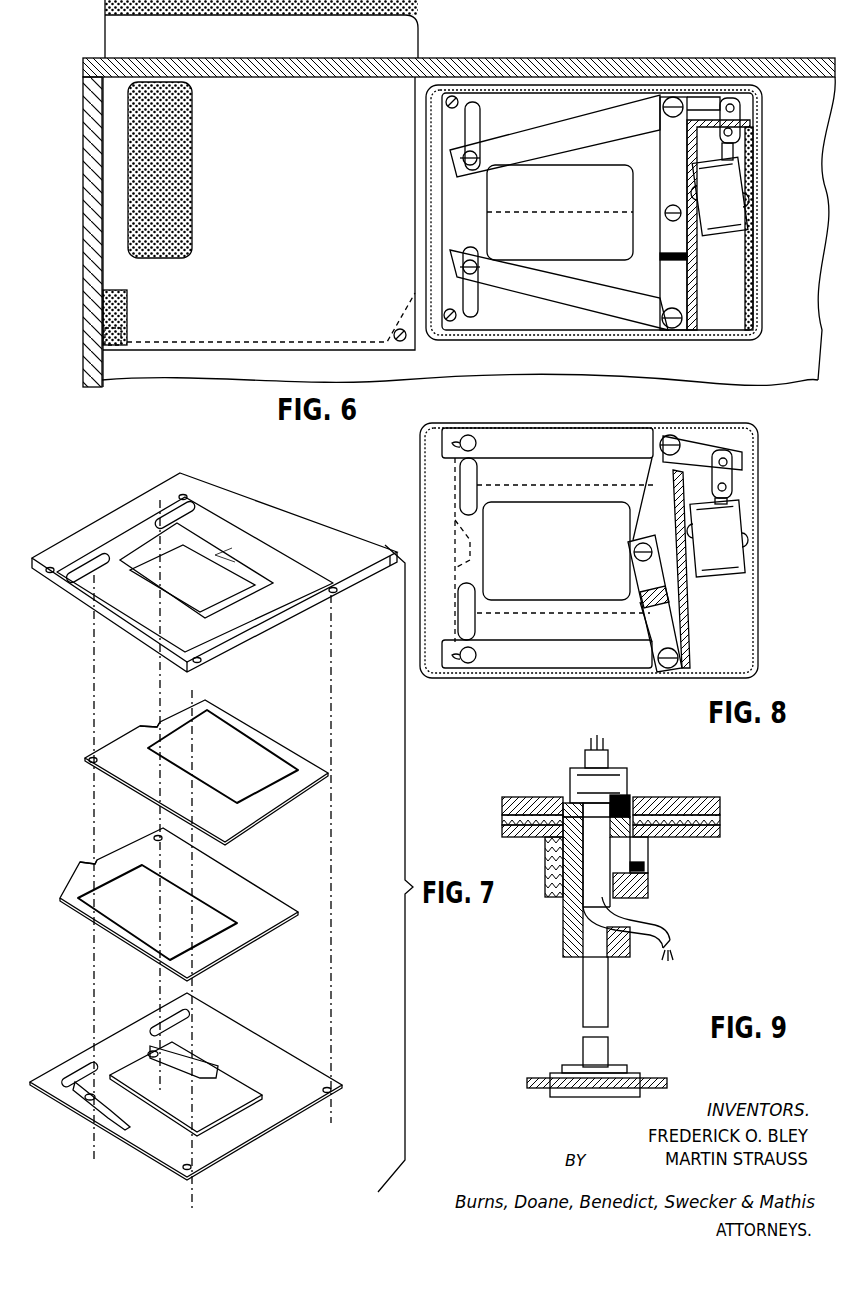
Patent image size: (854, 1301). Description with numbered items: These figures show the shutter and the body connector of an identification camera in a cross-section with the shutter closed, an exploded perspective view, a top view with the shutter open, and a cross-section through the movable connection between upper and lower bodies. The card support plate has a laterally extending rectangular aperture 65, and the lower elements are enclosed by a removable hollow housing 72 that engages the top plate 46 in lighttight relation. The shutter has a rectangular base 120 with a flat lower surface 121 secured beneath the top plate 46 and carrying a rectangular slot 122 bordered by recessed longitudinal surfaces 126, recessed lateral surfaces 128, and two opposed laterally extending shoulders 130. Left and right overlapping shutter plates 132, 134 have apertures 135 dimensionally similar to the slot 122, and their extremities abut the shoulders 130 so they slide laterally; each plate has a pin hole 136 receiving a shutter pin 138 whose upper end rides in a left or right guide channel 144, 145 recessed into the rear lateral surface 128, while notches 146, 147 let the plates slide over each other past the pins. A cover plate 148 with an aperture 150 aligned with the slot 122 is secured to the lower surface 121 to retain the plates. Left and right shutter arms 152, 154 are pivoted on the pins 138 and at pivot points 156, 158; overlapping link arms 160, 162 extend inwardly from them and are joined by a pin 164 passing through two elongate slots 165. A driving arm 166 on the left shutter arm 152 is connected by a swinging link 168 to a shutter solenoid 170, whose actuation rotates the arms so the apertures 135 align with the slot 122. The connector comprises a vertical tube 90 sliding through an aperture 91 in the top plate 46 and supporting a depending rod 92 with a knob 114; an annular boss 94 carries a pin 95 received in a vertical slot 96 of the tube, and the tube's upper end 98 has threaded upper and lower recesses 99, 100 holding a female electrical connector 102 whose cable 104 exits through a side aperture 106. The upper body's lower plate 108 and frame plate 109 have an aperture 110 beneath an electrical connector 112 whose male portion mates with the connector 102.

In FIG. 9, the top plate 46 is at (505, 828).
In FIG. 6, the aperture 65 is at (177, 133).
In FIG. 9, the housing 72 is at (653, 1080).
In FIG. 9, the tube 90 is at (563, 940).
In FIG. 9, the aperture 91 is at (630, 797).
In FIG. 9, the rod 92 is at (603, 993).
In FIG. 9, the annular boss 94 is at (648, 845).
In FIG. 9, the pin 95 is at (648, 887).
In FIG. 9, the slot 96 is at (645, 860).
In FIG. 9, the upper end 98 is at (569, 797).
In FIG. 9, the upper recess 99 is at (563, 812).
In FIG. 9, the lower recess 100 is at (558, 845).
In FIG. 9, the female electrical connector 102 is at (595, 805).
In FIG. 9, the electrical cable 104 is at (665, 925).
In FIG. 9, the side aperture 106 is at (622, 902).
In FIG. 9, the lower plate 108 is at (720, 822).
In FIG. 9, the frame plate 109 is at (720, 808).
In FIG. 9, the aperture 110 is at (668, 790).
In FIG. 9, the electrical connector 112 is at (578, 773).
In FIG. 9, the knob 114 is at (577, 1090).
In FIG. 7, the base 120 is at (365, 570).
In FIG. 7, the lower surface 121 is at (367, 622).
In FIG. 7, the slot 122 is at (219, 563).
In FIG. 7, the longitudinal surfaces 126 is at (267, 557).
In FIG. 7, the lateral surfaces 128 is at (135, 537).
In FIG. 7, the shoulders 130 is at (117, 542).
In FIG. 7, the left shutter plate 132 is at (241, 964).
In FIG. 7, the right shutter plate 134 is at (272, 823).
In FIG. 7, the apertures 135 is at (253, 752).
In FIG. 7, the aperture 136 is at (90, 758).
In FIG. 6, the shutter pin 138 is at (473, 153).
In FIG. 8, the shutter pin 138 is at (470, 436).
In FIG. 6, the left guide channel 144 is at (478, 97).
In FIG. 8, the left guide channel 144 is at (462, 468).
In FIG. 7, the left guide channel 144 is at (173, 508).
In FIG. 6, the right guide channel 145 is at (473, 313).
In FIG. 8, the right guide channel 145 is at (470, 595).
In FIG. 7, the right guide channel 145 is at (83, 570).
In FIG. 7, the notch 146 is at (82, 880).
In FIG. 7, the notch 147 is at (203, 702).
In FIG. 7, the cover plate 148 is at (267, 1123).
In FIG. 7, the aperture 150 is at (240, 1090).
In FIG. 6, the left shutter arm 152 is at (563, 130).
In FIG. 8, the left shutter arm 152 is at (567, 440).
In FIG. 7, the left shutter arm 152 is at (200, 1068).
In FIG. 6, the right shutter arm 154 is at (588, 297).
In FIG. 8, the right shutter arm 154 is at (557, 653).
In FIG. 7, the right shutter arm 154 is at (102, 1108).
In FIG. 6, the left pivot point 156 is at (674, 97).
In FIG. 8, the left pivot point 156 is at (670, 435).
In FIG. 6, the right pivot point 158 is at (668, 328).
In FIG. 8, the right pivot point 158 is at (672, 668).
In FIG. 6, the left link arm 160 is at (670, 157).
In FIG. 8, the left link arm 160 is at (650, 482).
In FIG. 6, the right link arm 162 is at (678, 295).
In FIG. 8, the right link arm 162 is at (663, 625).
In FIG. 6, the pin 164 is at (665, 219).
In FIG. 8, the pin 164 is at (636, 553).
In FIG. 6, the elongate slots 165 is at (668, 210).
In FIG. 6, the driving arm 166 is at (707, 100).
In FIG. 8, the driving arm 166 is at (700, 448).
In FIG. 6, the swinging link 168 is at (738, 123).
In FIG. 8, the swinging link 168 is at (733, 473).
In FIG. 6, the shutter solenoid 170 is at (730, 205).
In FIG. 8, the shutter solenoid 170 is at (740, 522).